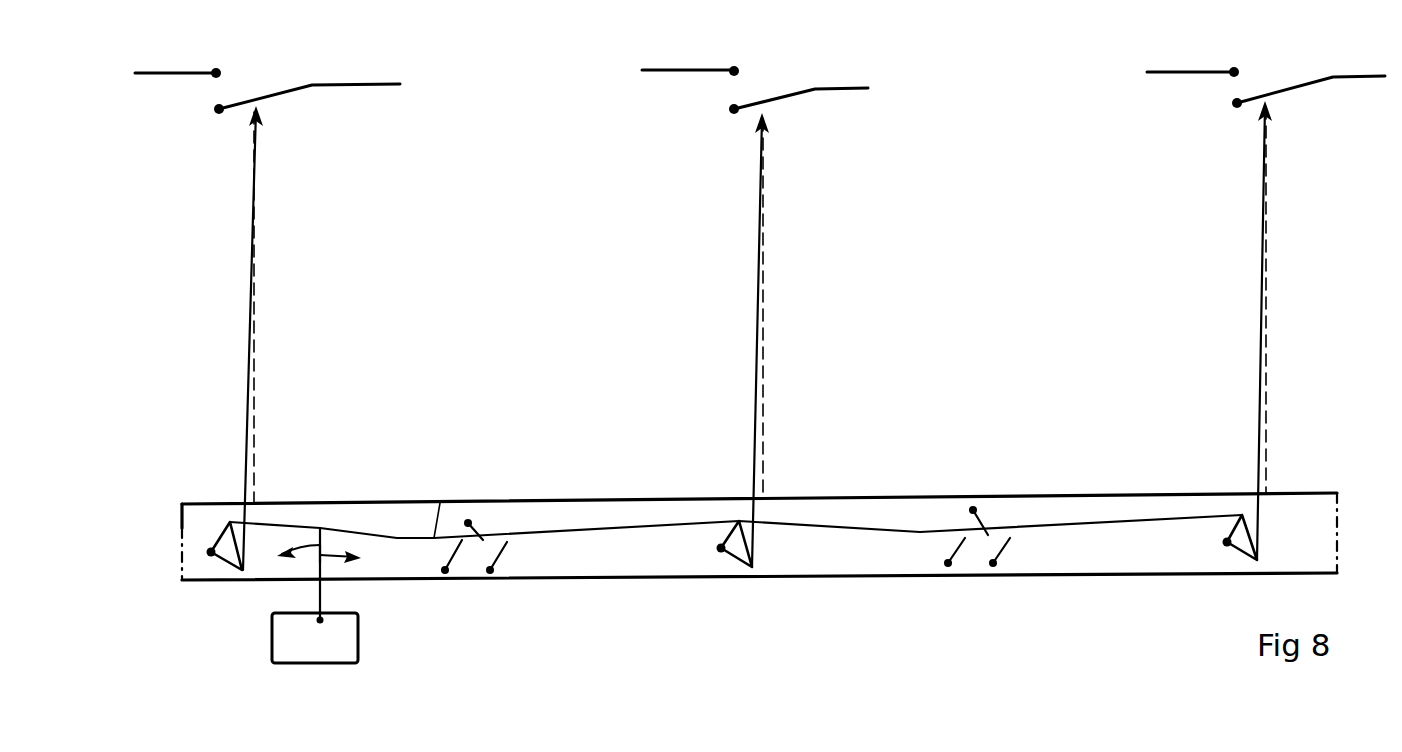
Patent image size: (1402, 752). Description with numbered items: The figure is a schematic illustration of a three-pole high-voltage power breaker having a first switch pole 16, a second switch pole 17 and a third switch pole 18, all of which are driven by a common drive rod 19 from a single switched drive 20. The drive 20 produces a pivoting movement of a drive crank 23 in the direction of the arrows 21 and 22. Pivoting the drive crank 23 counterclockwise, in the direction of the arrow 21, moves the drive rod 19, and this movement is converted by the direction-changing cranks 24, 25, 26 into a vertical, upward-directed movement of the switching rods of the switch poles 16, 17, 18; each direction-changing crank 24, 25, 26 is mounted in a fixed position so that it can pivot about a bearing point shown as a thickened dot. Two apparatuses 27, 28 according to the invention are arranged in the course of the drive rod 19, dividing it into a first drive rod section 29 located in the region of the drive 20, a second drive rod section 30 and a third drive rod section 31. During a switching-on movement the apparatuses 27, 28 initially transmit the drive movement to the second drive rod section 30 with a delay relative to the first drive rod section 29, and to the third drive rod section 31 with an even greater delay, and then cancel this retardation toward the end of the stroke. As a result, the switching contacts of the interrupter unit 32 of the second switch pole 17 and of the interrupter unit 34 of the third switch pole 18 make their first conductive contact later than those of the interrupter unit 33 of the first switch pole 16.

The first switch pole 16 is at (253, 298).
The second switch pole 17 is at (760, 285).
The third switch pole 18 is at (1262, 285).
The common drive rod 19 is at (407, 540).
The switched drive 20 is at (315, 663).
The arrow 21 is at (298, 537).
The arrow 22 is at (342, 555).
The drive crank 23 is at (318, 563).
The direction-changing crank 24 is at (219, 533).
The direction-changing crank 25 is at (721, 548).
The direction-changing crank 26 is at (1227, 542).
The apparatus 27 is at (510, 557).
The apparatus 28 is at (1020, 545).
The first drive rod section 29 is at (440, 503).
The second drive rod section 30 is at (647, 523).
The third drive rod section 31 is at (1150, 525).
The interrupter unit 32 is at (772, 68).
The interrupter unit 33 is at (250, 91).
The interrupter unit 34 is at (1264, 81).